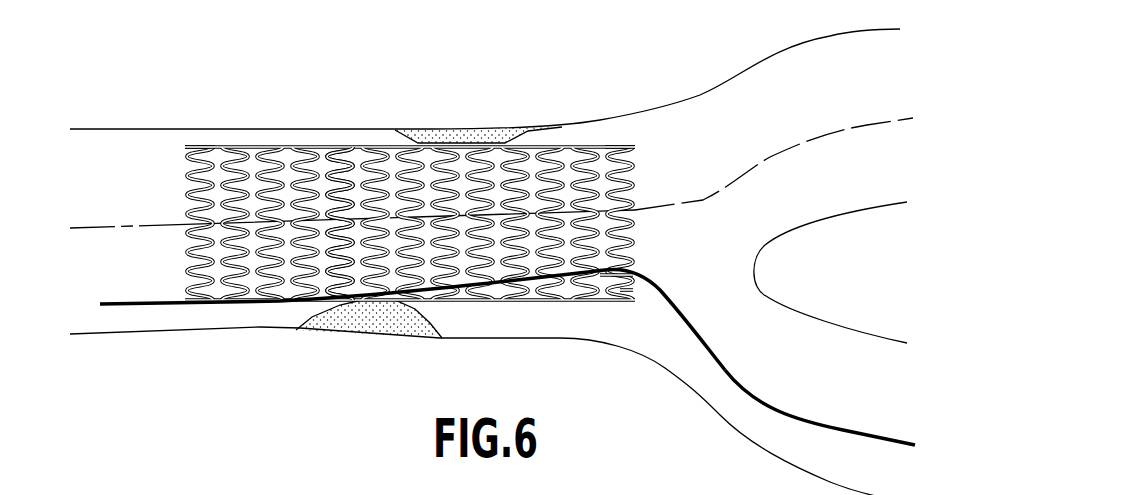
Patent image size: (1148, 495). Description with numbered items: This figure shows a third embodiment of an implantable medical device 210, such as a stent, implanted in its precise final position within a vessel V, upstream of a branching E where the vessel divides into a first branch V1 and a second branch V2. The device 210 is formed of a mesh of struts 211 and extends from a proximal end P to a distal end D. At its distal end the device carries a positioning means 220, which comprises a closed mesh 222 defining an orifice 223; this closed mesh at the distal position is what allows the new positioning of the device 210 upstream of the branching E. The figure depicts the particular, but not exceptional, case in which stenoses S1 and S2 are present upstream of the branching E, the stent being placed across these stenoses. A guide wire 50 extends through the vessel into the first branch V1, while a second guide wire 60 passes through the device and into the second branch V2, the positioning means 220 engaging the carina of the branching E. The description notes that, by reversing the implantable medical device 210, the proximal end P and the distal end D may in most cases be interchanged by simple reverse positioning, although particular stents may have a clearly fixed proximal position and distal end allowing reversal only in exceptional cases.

The blood vessel V is at (117, 126).
The proximal end of stent P is at (188, 141).
The implantable medical device 210 is at (416, 202).
The stent struts 211 is at (340, 160).
The stenosis S1 is at (325, 83).
The distal end of stent D is at (627, 118).
The first branch vessel V1 is at (772, 57).
The first guide wire 50 is at (783, 155).
The positioning means 220 is at (639, 262).
The branching E is at (758, 272).
The orifice 223 is at (613, 270).
The closed mesh 222 is at (614, 282).
The stenosis S2 is at (372, 322).
The second guide wire 60 is at (833, 425).
The second branch vessel V2 is at (775, 467).